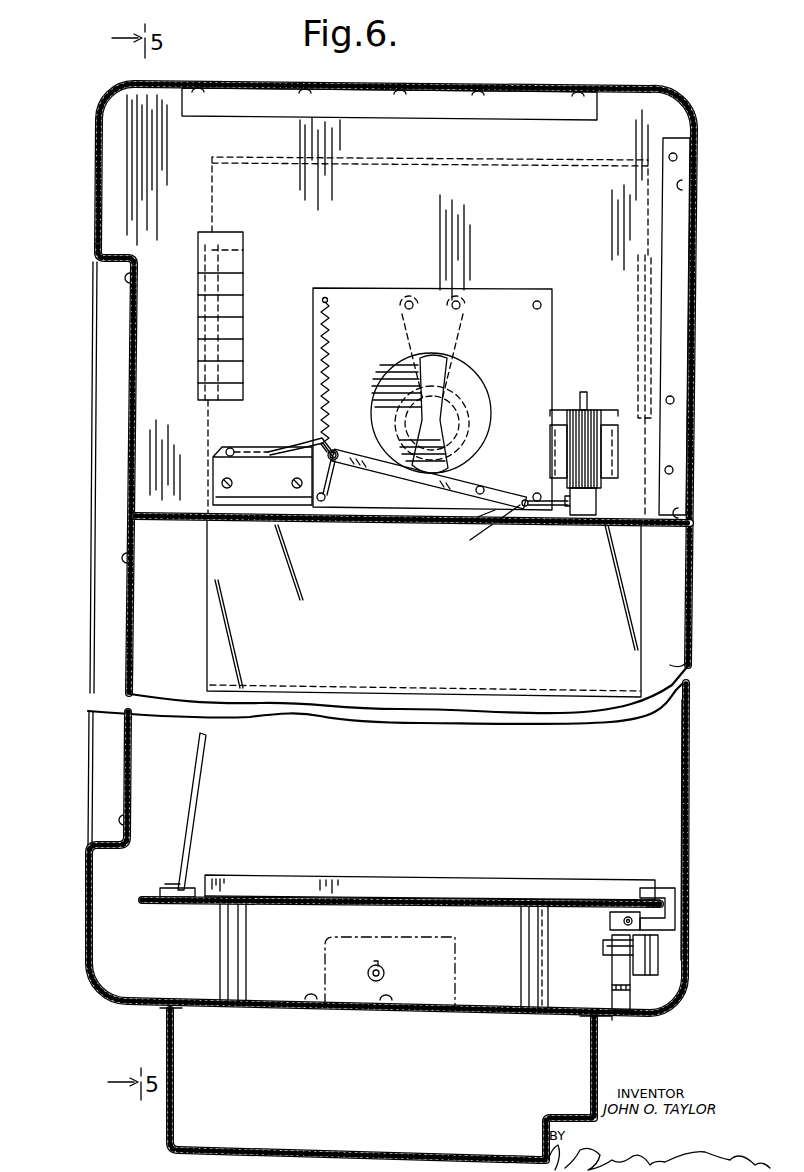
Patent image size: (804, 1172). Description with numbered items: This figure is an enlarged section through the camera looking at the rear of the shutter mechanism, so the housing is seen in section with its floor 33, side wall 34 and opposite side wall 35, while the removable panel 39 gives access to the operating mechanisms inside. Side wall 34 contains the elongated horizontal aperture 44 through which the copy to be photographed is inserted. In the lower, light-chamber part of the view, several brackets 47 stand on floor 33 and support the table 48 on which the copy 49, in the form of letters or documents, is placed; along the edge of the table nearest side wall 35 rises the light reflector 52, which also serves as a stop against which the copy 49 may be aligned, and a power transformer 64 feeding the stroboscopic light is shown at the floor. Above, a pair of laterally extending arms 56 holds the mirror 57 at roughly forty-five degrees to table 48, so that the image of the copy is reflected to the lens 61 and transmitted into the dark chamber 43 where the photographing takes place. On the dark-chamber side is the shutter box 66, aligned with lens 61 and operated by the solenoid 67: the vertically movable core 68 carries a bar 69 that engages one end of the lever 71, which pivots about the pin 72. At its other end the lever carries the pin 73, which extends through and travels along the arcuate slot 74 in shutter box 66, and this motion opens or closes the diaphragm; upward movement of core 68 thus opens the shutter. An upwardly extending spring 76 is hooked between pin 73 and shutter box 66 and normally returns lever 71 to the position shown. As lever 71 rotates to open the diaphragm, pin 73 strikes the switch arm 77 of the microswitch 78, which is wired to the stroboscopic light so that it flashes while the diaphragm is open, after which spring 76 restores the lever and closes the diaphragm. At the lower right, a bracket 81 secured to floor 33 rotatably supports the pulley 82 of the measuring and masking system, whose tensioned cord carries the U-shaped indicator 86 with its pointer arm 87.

The floor 33 is at (300, 1008).
The side wall 34 is at (693, 590).
The side wall 35 is at (92, 890).
The removable panel 39 is at (91, 622).
The dark chamber 43 is at (148, 180).
The horizontal aperture 44 is at (690, 766).
The brackets 47 is at (226, 940).
The table 48 is at (304, 906).
The copy 49 is at (392, 866).
The light reflector 52 is at (193, 783).
The laterally extending arms 56 is at (222, 255).
The mirror 57 is at (424, 164).
The lens 61 is at (470, 396).
The power transformer 64 is at (376, 986).
The shutter box 66 is at (490, 292).
The solenoid 67 is at (590, 410).
The core 68 is at (596, 496).
The bar 69 is at (568, 508).
The lever 71 is at (490, 510).
The pin 72 is at (486, 489).
The pin 73 is at (344, 448).
The arcuate slot 74 is at (327, 495).
The spring 76 is at (330, 370).
The switch arm 77 is at (324, 438).
The microswitch 78 is at (216, 470).
The brackets 81 is at (640, 1010).
The pulley 82 is at (660, 966).
The U-shaped indicator 86 is at (676, 904).
The pointer arm 87 is at (668, 886).